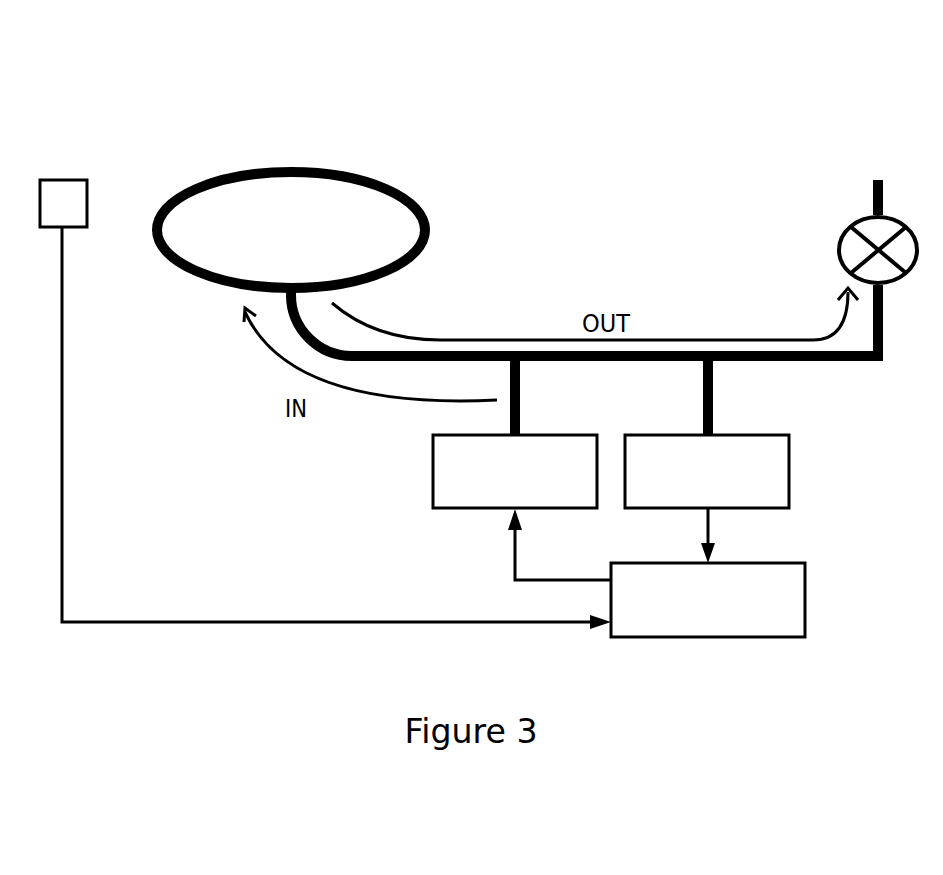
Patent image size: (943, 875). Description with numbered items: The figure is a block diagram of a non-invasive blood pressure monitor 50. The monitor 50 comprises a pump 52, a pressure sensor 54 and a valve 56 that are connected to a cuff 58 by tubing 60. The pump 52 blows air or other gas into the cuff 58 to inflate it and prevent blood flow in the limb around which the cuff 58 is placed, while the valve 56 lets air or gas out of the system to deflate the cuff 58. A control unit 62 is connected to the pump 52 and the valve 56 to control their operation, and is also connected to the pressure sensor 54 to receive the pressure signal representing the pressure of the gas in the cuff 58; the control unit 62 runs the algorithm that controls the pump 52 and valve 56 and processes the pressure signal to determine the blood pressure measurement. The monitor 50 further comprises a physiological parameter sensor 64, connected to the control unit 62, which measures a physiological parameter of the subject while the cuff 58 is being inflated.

The monitor 50 is at (795, 84).
The pump 52 is at (576, 433).
The pressure sensor 54 is at (769, 433).
The valve 56 is at (901, 218).
The cuff 58 is at (339, 168).
The tubing 60 is at (862, 363).
The control unit 62 is at (807, 592).
The physiological parameter sensor 64 is at (75, 178).